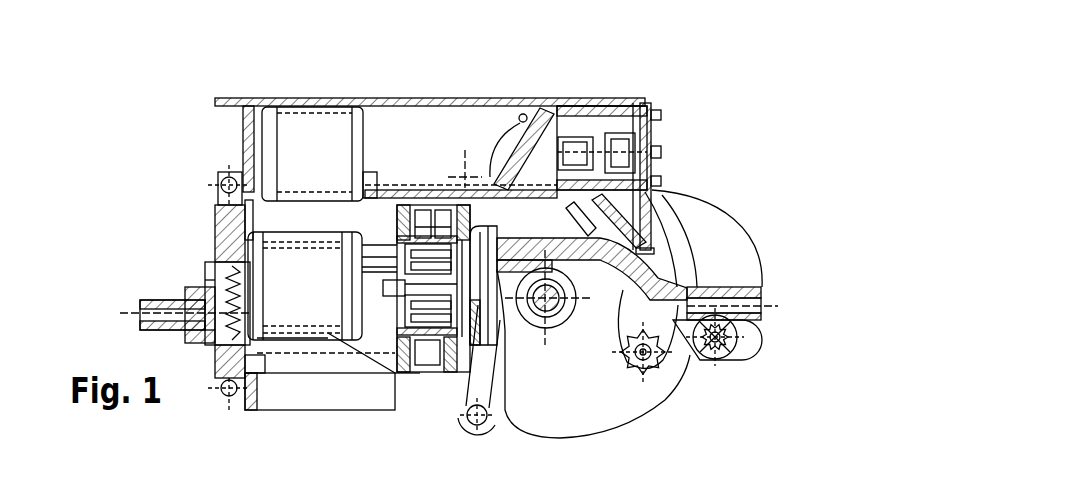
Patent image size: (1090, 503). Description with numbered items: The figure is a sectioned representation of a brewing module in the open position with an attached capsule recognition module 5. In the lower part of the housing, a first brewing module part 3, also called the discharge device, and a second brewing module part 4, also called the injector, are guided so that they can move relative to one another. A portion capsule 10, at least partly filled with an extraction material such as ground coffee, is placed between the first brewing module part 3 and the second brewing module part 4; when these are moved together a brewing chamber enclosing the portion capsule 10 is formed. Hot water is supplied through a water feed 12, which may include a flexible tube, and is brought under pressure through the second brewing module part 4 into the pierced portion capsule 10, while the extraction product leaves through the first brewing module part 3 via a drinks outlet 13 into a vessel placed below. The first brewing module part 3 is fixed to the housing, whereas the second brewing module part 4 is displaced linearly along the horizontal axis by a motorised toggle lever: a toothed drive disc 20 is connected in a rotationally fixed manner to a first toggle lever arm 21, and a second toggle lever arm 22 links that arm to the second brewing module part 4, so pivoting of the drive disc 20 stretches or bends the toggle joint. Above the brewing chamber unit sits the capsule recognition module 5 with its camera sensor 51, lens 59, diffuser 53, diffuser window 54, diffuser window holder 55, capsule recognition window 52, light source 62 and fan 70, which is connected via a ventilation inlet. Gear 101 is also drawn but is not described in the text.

The first brewing module part 3 is at (198, 334).
The second brewing module part 4 is at (460, 355).
The capsule recognition module 5 is at (581, 80).
The portion capsule 10 is at (315, 138).
The water feed 12 is at (680, 322).
The drinks outlet 13 is at (157, 300).
The toothed drive disc 20 is at (583, 420).
The first toggle lever arm 21 is at (493, 393).
The second toggle lever arm 22 is at (480, 368).
The camera sensor 51 is at (652, 151).
The capsule recognition window 52 is at (520, 110).
The diffuser 53 is at (580, 108).
The diffuser window 54 is at (645, 108).
The diffuser window holder 55 is at (652, 172).
The lens 59 is at (647, 135).
The light source 62 is at (660, 192).
The fan 70 is at (490, 108).
The intermediate gear 101 is at (652, 365).